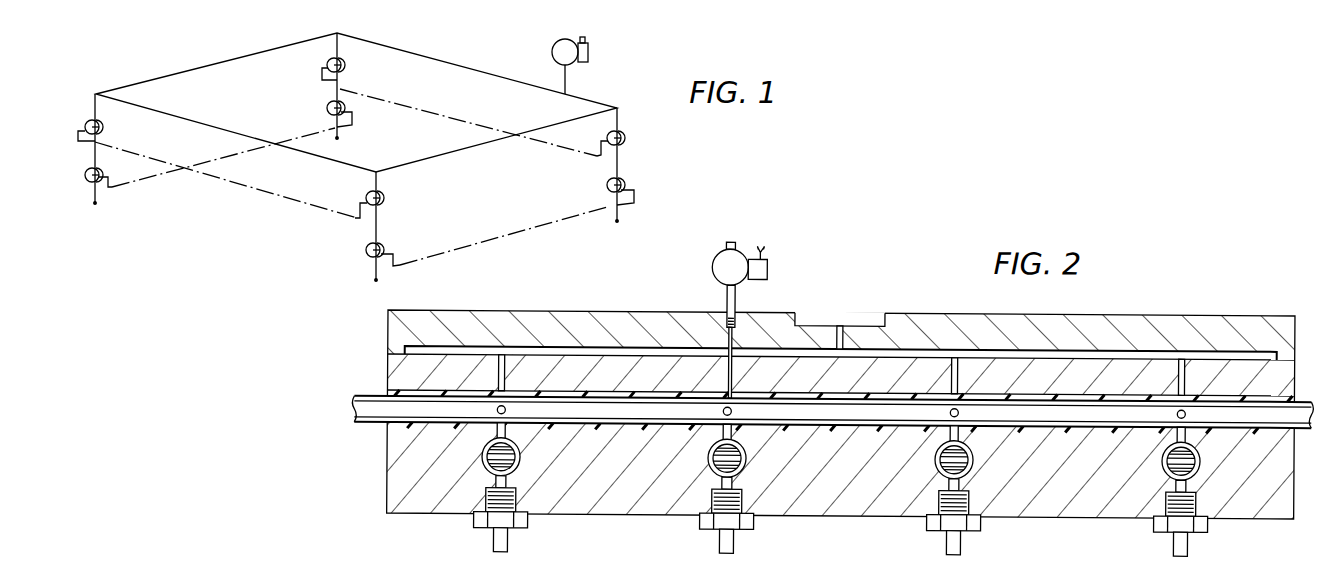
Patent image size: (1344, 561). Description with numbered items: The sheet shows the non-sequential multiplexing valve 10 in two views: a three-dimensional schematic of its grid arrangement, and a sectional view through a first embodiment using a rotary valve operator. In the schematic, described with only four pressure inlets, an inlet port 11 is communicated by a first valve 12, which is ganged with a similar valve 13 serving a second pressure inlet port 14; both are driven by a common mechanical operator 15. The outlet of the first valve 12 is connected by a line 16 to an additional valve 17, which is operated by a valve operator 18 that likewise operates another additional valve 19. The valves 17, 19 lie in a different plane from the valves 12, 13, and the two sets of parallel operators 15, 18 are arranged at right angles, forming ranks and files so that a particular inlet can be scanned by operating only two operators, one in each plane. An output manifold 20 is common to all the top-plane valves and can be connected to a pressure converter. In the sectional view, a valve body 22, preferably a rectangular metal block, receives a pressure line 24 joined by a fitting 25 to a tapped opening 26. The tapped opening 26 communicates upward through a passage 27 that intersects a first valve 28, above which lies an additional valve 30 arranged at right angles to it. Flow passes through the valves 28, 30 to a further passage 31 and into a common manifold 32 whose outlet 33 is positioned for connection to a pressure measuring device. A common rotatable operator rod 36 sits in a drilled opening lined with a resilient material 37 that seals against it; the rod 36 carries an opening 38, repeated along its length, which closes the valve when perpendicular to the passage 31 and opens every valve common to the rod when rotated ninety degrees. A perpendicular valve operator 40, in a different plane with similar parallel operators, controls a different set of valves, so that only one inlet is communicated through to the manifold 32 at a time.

In FIG. 1, the non-sequential multiplexing valve 10 is at (200, 250).
In FIG. 1, the inlet port 11 is at (378, 274).
In FIG. 1, the first valve 12 is at (366, 253).
In FIG. 1, the valve 13 is at (623, 183).
In FIG. 1, the second pressure inlet port 14 is at (620, 219).
In FIG. 1, the common mechanical operator 15 is at (518, 232).
In FIG. 1, the line 16 is at (377, 228).
In FIG. 1, the additional valve 17 is at (383, 197).
In FIG. 1, the valve operator 18 is at (233, 184).
In FIG. 1, the additional valve 19 is at (86, 122).
In FIG. 1, the output manifold 20 is at (447, 62).
In FIG. 2, the valve body 22 is at (387, 501).
In FIG. 2, the pressure line 24 is at (509, 545).
In FIG. 2, the fitting 25 is at (530, 522).
In FIG. 2, the tapped opening 26 is at (486, 496).
In FIG. 2, the passage 27 is at (508, 483).
In FIG. 2, the first valve 28 is at (479, 453).
In FIG. 2, the additional valve 30 is at (460, 381).
In FIG. 2, the passage 31 is at (508, 352).
In FIG. 2, the common manifold 32 is at (600, 352).
In FIG. 2, the outlet 33 is at (813, 323).
In FIG. 2, the rotatable operator rod 36 is at (357, 406).
In FIG. 2, the resilient material 37 is at (413, 428).
In FIG. 2, the opening 38 is at (507, 409).
In FIG. 2, the valve operator 40 is at (484, 466).